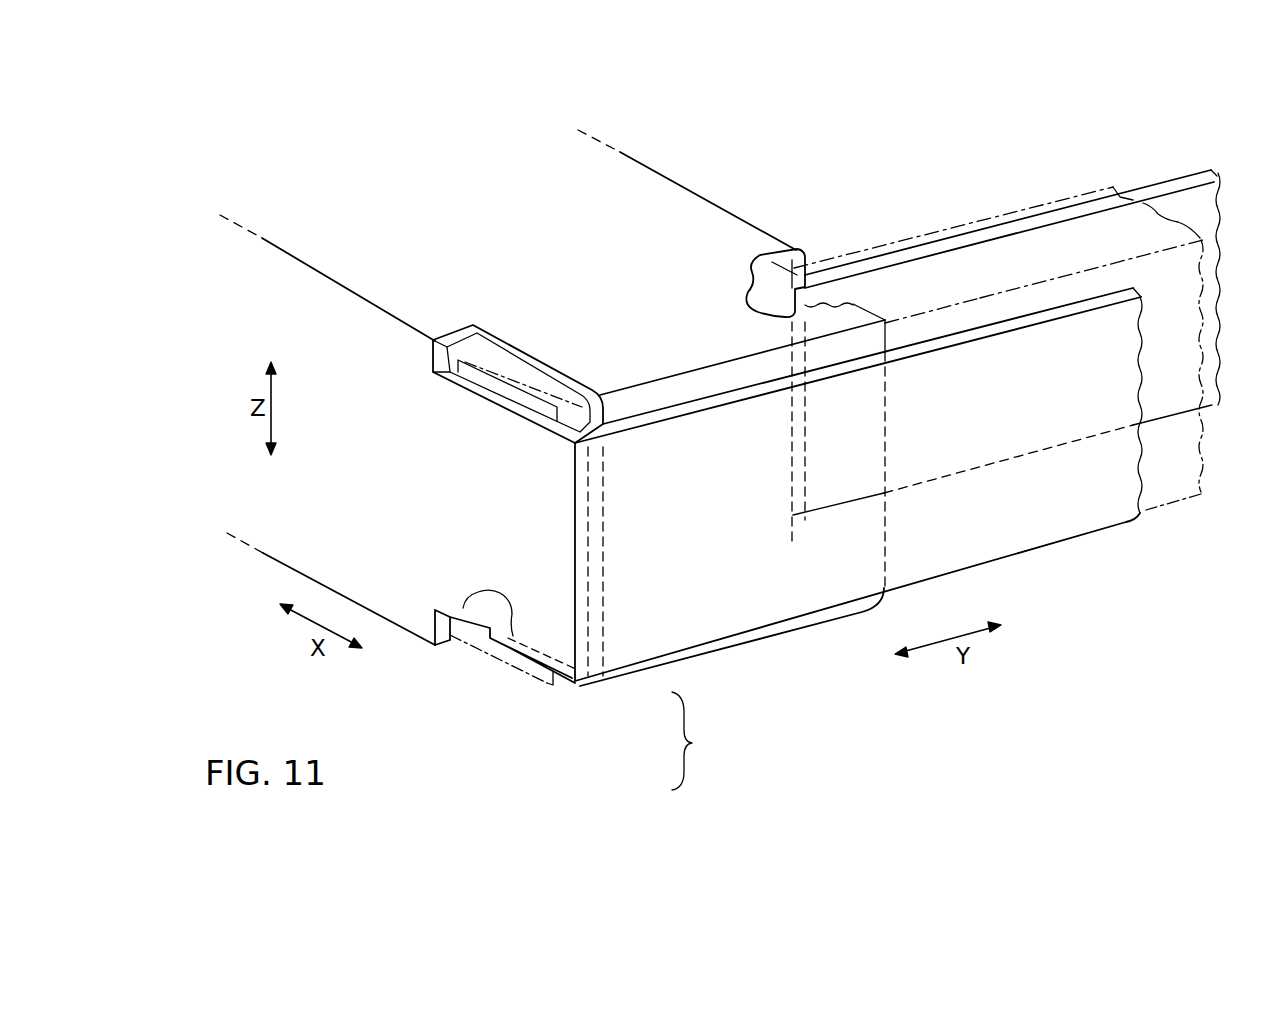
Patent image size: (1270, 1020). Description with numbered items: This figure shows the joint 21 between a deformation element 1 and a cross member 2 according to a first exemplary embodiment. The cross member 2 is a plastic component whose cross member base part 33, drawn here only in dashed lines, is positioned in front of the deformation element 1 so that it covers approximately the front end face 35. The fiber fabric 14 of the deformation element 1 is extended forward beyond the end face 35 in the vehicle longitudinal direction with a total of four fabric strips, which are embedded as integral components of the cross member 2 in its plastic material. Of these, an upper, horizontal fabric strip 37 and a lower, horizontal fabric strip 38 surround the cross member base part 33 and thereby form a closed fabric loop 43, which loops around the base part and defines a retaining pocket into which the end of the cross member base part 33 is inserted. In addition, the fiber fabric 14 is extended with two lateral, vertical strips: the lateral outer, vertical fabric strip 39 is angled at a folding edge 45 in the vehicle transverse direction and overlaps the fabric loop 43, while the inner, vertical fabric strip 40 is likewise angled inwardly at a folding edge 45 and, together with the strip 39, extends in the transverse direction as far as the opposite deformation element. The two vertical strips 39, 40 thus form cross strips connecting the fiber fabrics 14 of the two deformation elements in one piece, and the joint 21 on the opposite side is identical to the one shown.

The deformation element 1 is at (686, 178).
The cross member 2 is at (1087, 183).
The fiber fabric 14 is at (622, 266).
The joint 21 is at (523, 688).
The cross member base part 33 is at (495, 378).
The front end face 35 is at (798, 260).
The upper horizontal fabric strip 37 is at (640, 368).
The lower horizontal fabric strip 38 is at (585, 683).
The lateral outer vertical fabric strip 39 is at (475, 487).
The inner vertical fabric strip 40 is at (925, 244).
The fabric loop 43 is at (697, 741).
The folding edge 45 is at (573, 553).